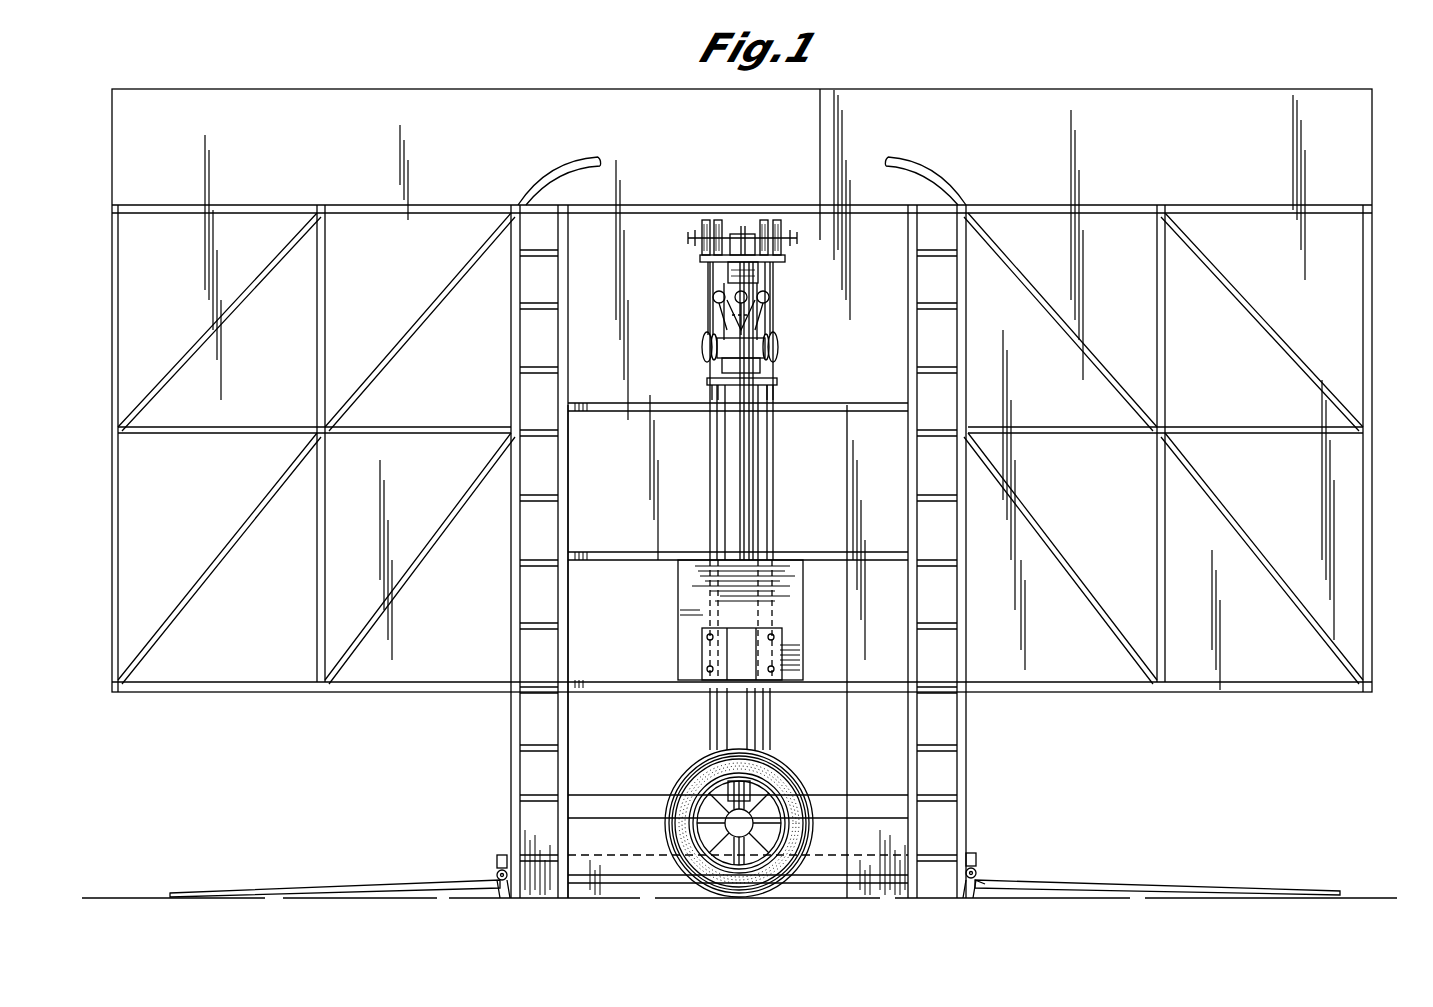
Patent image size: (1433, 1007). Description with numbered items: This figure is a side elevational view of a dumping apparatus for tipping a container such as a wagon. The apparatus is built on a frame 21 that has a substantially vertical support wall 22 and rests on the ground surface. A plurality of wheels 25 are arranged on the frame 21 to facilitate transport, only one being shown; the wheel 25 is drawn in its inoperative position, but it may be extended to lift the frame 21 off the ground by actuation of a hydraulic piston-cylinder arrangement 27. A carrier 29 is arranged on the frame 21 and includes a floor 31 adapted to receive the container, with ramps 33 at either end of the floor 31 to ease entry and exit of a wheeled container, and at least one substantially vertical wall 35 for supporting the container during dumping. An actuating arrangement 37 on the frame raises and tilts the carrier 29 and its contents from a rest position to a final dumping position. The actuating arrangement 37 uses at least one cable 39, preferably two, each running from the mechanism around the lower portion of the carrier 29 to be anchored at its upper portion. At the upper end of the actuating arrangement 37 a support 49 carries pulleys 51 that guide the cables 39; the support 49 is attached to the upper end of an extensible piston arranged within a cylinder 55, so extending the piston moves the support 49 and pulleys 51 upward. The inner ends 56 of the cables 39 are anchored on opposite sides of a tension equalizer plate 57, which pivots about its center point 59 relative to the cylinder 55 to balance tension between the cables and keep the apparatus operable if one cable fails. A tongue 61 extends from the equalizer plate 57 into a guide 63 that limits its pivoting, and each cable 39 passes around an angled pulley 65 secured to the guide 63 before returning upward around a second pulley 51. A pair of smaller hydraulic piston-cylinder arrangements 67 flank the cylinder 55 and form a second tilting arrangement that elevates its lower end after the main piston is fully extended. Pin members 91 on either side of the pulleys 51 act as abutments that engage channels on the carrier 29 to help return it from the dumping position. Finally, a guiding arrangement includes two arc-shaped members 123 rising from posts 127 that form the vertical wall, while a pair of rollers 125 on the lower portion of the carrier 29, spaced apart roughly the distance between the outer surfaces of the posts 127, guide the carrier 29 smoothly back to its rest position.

The frame 21 is at (658, 888).
The vertical support wall 22 is at (968, 727).
The wheel 25 is at (782, 788).
The hydraulic piston-cylinder arrangement 27 is at (730, 701).
The carrier 29 is at (1380, 218).
The floor 31 is at (988, 876).
The ramps 33 is at (322, 885).
The vertical wall 35 is at (122, 165).
The actuating arrangement 37 is at (796, 404).
The cable 39 is at (710, 270).
The support 49 is at (700, 258).
The pulleys 51 is at (718, 221).
The cylinder 55 is at (726, 452).
The inner ends of the cables 56 is at (760, 305).
The tension equalizer plate 57 is at (722, 303).
The center point 59 is at (741, 230).
The tongue 61 is at (757, 328).
The guide 63 is at (730, 360).
The angled pulley 65 is at (704, 346).
The hydraulic piston-cylinder arrangements 67 is at (708, 492).
The pin members 91 is at (690, 233).
The arc-shaped members 123 is at (541, 172).
The rollers 125 is at (500, 870).
The posts 127 is at (508, 722).